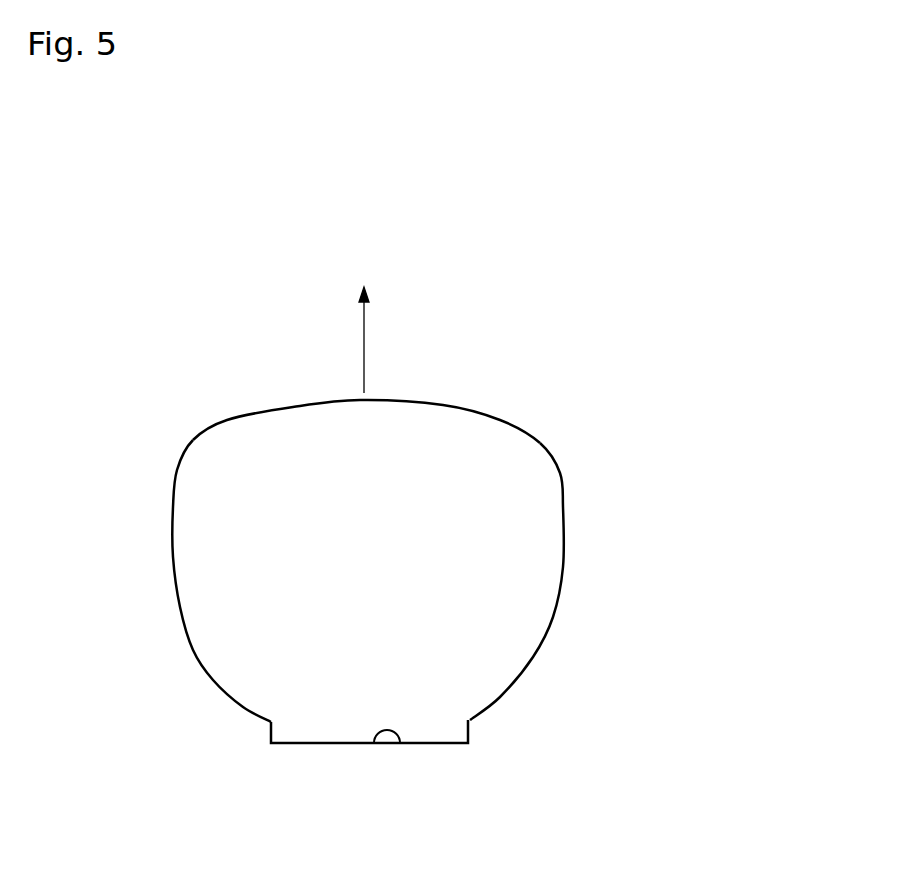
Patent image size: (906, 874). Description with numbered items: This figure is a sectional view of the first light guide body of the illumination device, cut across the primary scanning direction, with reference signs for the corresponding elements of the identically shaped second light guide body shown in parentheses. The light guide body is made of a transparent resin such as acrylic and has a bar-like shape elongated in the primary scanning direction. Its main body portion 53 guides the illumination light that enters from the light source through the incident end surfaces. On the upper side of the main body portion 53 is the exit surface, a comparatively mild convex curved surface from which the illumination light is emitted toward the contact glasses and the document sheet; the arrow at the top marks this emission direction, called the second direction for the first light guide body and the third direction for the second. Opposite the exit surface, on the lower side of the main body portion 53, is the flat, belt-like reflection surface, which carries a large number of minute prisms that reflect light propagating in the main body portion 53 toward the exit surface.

The main body portion 53 is at (563, 563).